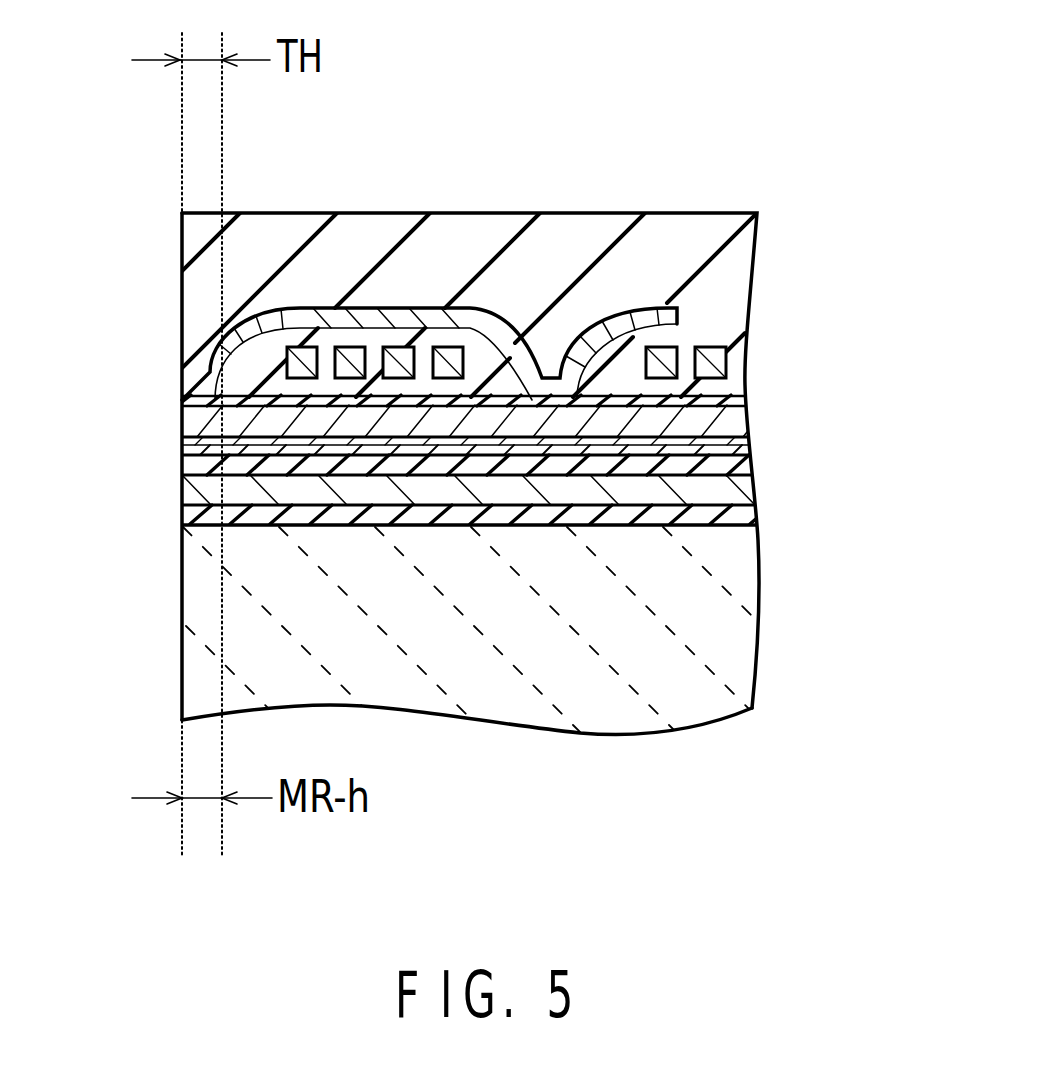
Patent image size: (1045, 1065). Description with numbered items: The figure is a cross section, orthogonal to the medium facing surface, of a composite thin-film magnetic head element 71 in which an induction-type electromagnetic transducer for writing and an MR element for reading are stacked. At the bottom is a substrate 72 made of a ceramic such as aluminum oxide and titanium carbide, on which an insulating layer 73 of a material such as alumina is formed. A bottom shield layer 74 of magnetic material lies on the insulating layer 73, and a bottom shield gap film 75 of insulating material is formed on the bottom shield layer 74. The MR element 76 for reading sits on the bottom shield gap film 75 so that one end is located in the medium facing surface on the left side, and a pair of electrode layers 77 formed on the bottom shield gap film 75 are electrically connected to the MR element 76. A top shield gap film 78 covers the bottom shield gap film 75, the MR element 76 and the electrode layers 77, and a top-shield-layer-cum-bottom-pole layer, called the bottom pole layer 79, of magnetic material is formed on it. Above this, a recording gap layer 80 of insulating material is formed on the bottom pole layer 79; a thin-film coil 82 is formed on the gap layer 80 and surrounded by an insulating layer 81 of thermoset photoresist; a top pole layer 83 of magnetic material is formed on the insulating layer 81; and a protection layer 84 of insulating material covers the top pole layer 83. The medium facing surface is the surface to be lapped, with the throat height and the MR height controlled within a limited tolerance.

The thin-film magnetic head element 71 is at (643, 152).
The substrate 72 is at (182, 678).
The insulating layer 73 is at (182, 527).
The bottom shield layer 74 is at (182, 512).
The bottom shield gap film 75 is at (183, 463).
The MR element 76 is at (182, 448).
The electrode layers 77 is at (750, 450).
The top shield gap film 78 is at (182, 443).
The bottom pole layer 79 is at (181, 420).
The recording gap layer 80 is at (215, 344).
The insulating layer 81 is at (266, 355).
The thin-film coil 82 is at (295, 347).
The top pole layer 83 is at (402, 318).
The protection layer 84 is at (267, 213).